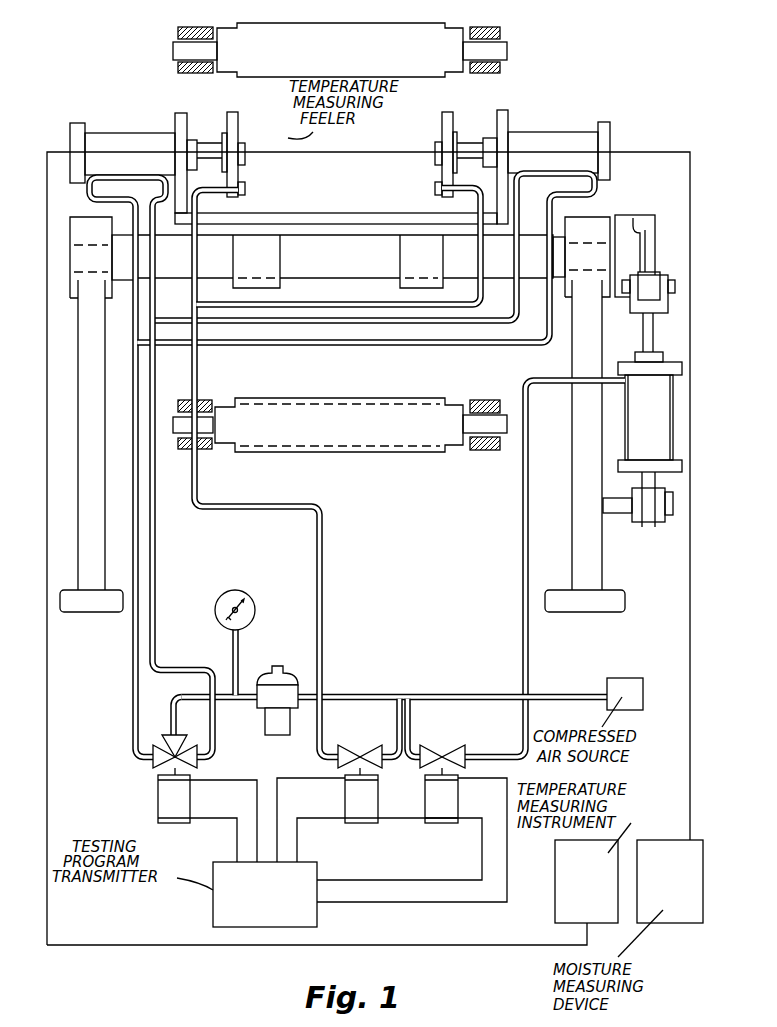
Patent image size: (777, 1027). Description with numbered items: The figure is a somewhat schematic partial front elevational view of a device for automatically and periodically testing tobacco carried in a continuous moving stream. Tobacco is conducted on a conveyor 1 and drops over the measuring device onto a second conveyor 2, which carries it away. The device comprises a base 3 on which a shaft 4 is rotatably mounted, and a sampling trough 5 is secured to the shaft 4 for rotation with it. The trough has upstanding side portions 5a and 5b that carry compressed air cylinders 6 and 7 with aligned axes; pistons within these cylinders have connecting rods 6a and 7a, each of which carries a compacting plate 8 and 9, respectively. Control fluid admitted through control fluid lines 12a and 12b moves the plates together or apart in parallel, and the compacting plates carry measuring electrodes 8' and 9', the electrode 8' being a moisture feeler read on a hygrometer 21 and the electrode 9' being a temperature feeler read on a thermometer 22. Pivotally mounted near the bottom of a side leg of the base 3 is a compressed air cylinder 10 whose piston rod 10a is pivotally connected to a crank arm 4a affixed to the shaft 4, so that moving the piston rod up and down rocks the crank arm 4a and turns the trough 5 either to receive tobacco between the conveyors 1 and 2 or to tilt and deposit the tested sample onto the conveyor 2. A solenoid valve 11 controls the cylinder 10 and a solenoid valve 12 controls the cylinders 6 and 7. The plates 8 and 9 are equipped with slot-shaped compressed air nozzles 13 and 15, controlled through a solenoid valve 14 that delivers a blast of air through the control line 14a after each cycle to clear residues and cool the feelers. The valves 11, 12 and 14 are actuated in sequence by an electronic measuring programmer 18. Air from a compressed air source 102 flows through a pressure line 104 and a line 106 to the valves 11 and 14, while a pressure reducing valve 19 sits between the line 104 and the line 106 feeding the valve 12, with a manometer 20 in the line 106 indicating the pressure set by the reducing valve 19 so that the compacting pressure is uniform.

The conveyor 1 is at (442, 57).
The second conveyor 2 is at (452, 438).
The base 3 is at (92, 517).
The shaft 4 is at (312, 245).
The crank arm 4a is at (633, 222).
The sampling trough 5 is at (358, 218).
The upstanding side portion 5a is at (503, 110).
The upstanding side portion 5b is at (185, 115).
The compressed air cylinder 6 is at (547, 135).
The connecting rod 6a is at (476, 141).
The compressed air cylinder 7 is at (128, 142).
The connecting rod 7a is at (217, 146).
The compacting plate 8 is at (451, 150).
The measuring electrode 8' is at (420, 152).
The compacting plate 9 is at (245, 149).
The measuring electrode 9' is at (265, 148).
The compressed air cylinder 10 is at (630, 437).
The piston rod 10a is at (643, 335).
The solenoid valve 11 is at (442, 773).
The solenoid valve 12 is at (168, 768).
The control fluid line 12a is at (245, 345).
The control fluid line 12b is at (370, 327).
The compressed air nozzle 13 is at (434, 189).
The solenoid valve 14 is at (360, 773).
The control line 14a is at (323, 645).
The compressed air nozzle 15 is at (246, 190).
The electronic measuring programmer 18 is at (278, 904).
The pressure reducing valve 19 is at (293, 675).
The manometer 20 is at (249, 632).
The hygrometer 21 is at (684, 891).
The thermometer 22 is at (601, 891).
The compressed air source 102 is at (623, 682).
The pressure line 104 is at (483, 692).
The line 106 is at (181, 693).